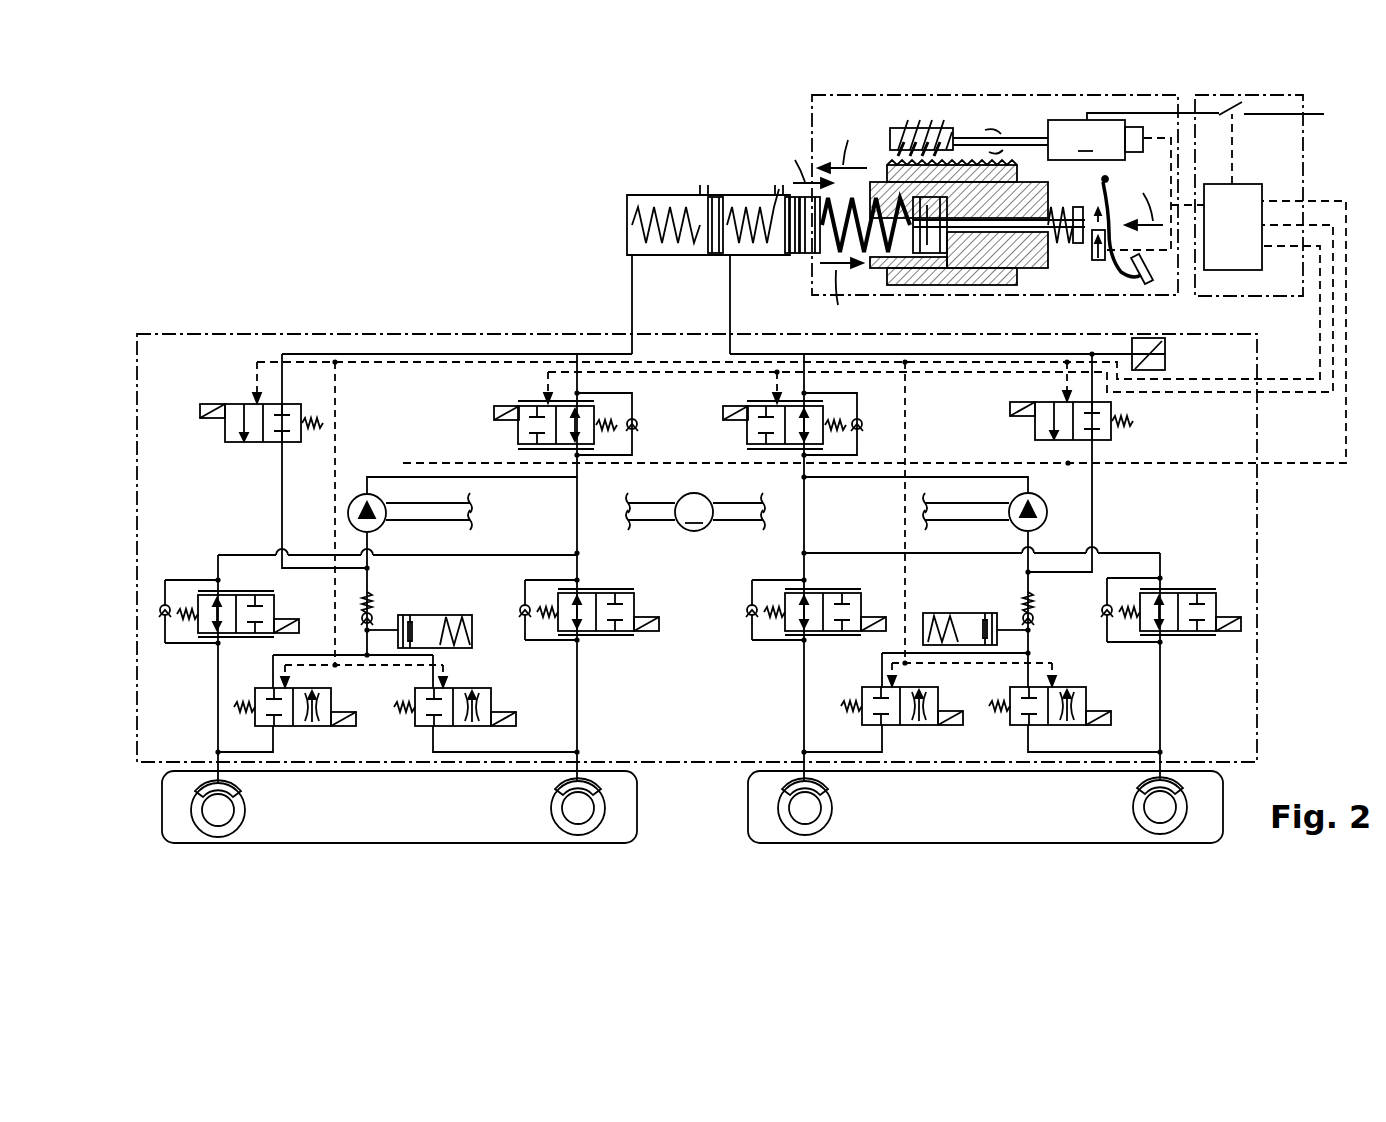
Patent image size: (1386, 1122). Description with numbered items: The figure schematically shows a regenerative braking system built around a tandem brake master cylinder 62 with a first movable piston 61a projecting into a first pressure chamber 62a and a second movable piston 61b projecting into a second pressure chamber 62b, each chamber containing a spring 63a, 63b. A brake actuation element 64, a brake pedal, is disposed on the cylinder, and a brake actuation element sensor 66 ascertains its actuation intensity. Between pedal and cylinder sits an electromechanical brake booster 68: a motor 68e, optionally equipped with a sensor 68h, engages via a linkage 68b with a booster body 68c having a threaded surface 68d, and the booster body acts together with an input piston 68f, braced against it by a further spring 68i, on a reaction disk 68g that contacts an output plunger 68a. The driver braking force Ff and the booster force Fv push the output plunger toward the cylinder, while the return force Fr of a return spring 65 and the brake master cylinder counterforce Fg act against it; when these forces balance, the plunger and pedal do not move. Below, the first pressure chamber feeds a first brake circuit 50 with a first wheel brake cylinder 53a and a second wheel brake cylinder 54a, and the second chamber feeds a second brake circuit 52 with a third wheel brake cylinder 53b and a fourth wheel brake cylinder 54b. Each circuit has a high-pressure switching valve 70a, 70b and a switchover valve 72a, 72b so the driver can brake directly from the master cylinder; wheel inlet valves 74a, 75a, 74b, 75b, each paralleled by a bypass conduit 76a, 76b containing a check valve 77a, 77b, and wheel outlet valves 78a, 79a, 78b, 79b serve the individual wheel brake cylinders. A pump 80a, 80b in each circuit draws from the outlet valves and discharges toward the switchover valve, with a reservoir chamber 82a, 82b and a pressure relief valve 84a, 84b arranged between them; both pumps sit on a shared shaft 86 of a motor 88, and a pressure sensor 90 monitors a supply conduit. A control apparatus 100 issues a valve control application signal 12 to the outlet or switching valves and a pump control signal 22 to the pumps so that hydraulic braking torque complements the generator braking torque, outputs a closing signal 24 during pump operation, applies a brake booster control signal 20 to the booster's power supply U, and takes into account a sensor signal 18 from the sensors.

The valve control application signal 12 is at (1298, 376).
The sensor signal or information signal 18 is at (1178, 96).
The brake booster control signal 20 is at (1232, 152).
The pump control signal 22 is at (1290, 465).
The closing signal 24 is at (1307, 394).
The first brake circuit 50 is at (793, 703).
The second brake circuit 52 is at (592, 688).
The first wheel brake cylinder 53a is at (826, 786).
The third wheel brake cylinder 53b is at (554, 784).
The second wheel brake cylinder 54a is at (1137, 784).
The fourth wheel brake cylinder 54b is at (230, 787).
The first movable piston 61a is at (790, 197).
The second movable piston 61b is at (715, 197).
The brake master cylinder 62 is at (627, 205).
The first pressure chamber 62a is at (760, 256).
The second pressure chamber 62b is at (672, 256).
The spring 63a is at (757, 205).
The spring 63b is at (662, 205).
The brake actuation element 64 is at (1140, 277).
The return spring 65 is at (866, 267).
The brake actuation element sensor 66 is at (1098, 260).
The brake booster 68 is at (985, 125).
The output plunger 68a is at (812, 253).
The linkage 68b is at (923, 128).
The booster body 68c is at (1017, 202).
The threaded surface 68d is at (965, 160).
The motor 68e is at (1070, 120).
The input piston 68f is at (1078, 244).
The reaction disk 68g is at (950, 285).
The sensor 68h is at (1132, 127).
The further spring 68i is at (1062, 250).
The high-pressure switching valve 70a is at (1035, 433).
The high-pressure switching valve 70b is at (225, 433).
The switchover valve 72a is at (747, 433).
The switchover valve 72b is at (518, 433).
The first wheel inlet valve 74a is at (835, 640).
The third wheel inlet valve 74b is at (615, 637).
The second wheel inlet valve 75a is at (1197, 637).
The fourth wheel inlet valve 75b is at (240, 638).
The bypass conduit 76a is at (749, 630).
The bypass conduit 76b is at (180, 644).
The check valve 77a is at (744, 606).
The check valve 77b is at (524, 616).
The first wheel outlet valve 78a is at (928, 726).
The third wheel outlet valve 78b is at (413, 692).
The second wheel outlet valve 79a is at (1088, 690).
The fourth wheel outlet valve 79b is at (323, 727).
The pump 80a is at (1009, 522).
The pump 80b is at (386, 522).
The reservoir chamber 82a is at (930, 613).
The reservoir chamber 82b is at (460, 615).
The pressure relief valve 84a is at (1020, 614).
The pressure relief valve 84b is at (374, 610).
The shared shaft 86 is at (740, 521).
The motor 88 is at (682, 530).
The pressure sensor 90 is at (1165, 354).
The control apparatus 100 is at (1230, 270).
The power supply U is at (1214, 115).
The booster force Fv is at (842, 146).
The brake master cylinder counterforce Fg is at (805, 163).
The return force Fr is at (841, 293).
The driver braking force Ff is at (1144, 201).